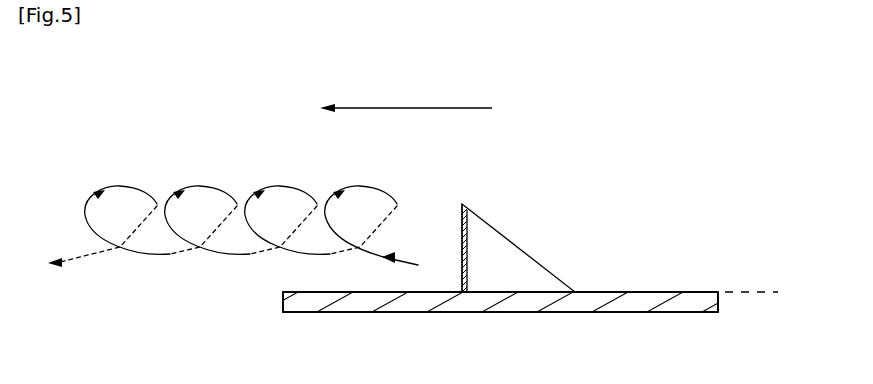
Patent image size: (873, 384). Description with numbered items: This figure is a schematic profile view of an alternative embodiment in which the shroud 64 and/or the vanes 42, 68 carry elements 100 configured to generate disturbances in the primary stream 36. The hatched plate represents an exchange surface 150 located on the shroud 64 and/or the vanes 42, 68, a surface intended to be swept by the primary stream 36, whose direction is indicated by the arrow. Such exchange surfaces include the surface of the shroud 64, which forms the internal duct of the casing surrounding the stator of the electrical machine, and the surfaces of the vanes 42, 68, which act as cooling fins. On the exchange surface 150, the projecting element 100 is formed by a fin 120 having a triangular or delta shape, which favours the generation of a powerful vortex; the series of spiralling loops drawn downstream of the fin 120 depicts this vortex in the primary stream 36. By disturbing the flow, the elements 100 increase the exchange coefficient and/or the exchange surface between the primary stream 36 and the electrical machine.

The primary stream 36 is at (390, 106).
The elements 100 is at (533, 253).
The fins 120 is at (468, 210).
The exchange surface 150 is at (675, 303).
The shroud 64 is at (313, 312).
The vanes 42 is at (313, 312).
The vanes 68 is at (313, 312).